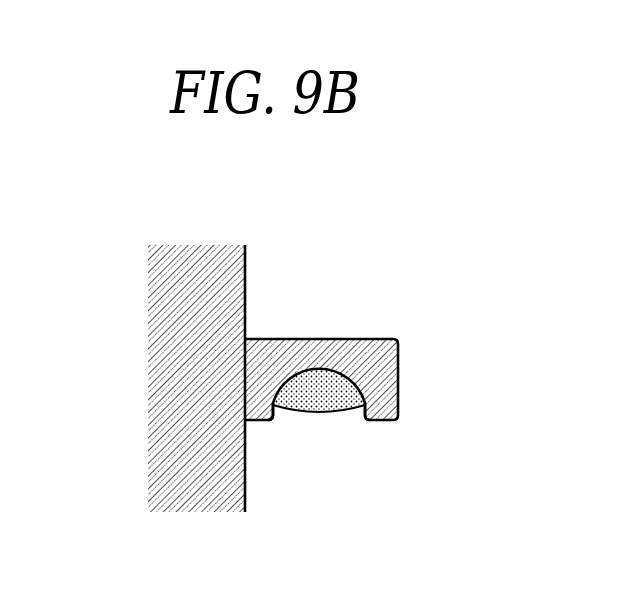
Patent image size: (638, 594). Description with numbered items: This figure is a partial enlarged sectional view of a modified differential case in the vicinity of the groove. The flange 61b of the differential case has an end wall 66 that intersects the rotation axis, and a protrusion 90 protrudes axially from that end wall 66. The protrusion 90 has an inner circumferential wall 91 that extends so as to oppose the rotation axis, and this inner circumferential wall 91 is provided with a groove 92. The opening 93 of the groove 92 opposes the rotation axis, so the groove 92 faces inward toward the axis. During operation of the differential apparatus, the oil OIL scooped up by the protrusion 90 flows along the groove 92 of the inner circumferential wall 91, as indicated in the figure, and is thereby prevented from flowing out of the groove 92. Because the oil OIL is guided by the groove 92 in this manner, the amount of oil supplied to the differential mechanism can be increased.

The flange 61b is at (172, 356).
The end wall 66 is at (245, 486).
The protrusion 90 is at (355, 338).
The inner circumferential wall 91 is at (377, 421).
The groove 92 is at (277, 420).
The opening 93 is at (308, 418).
The oil OIL is at (343, 416).